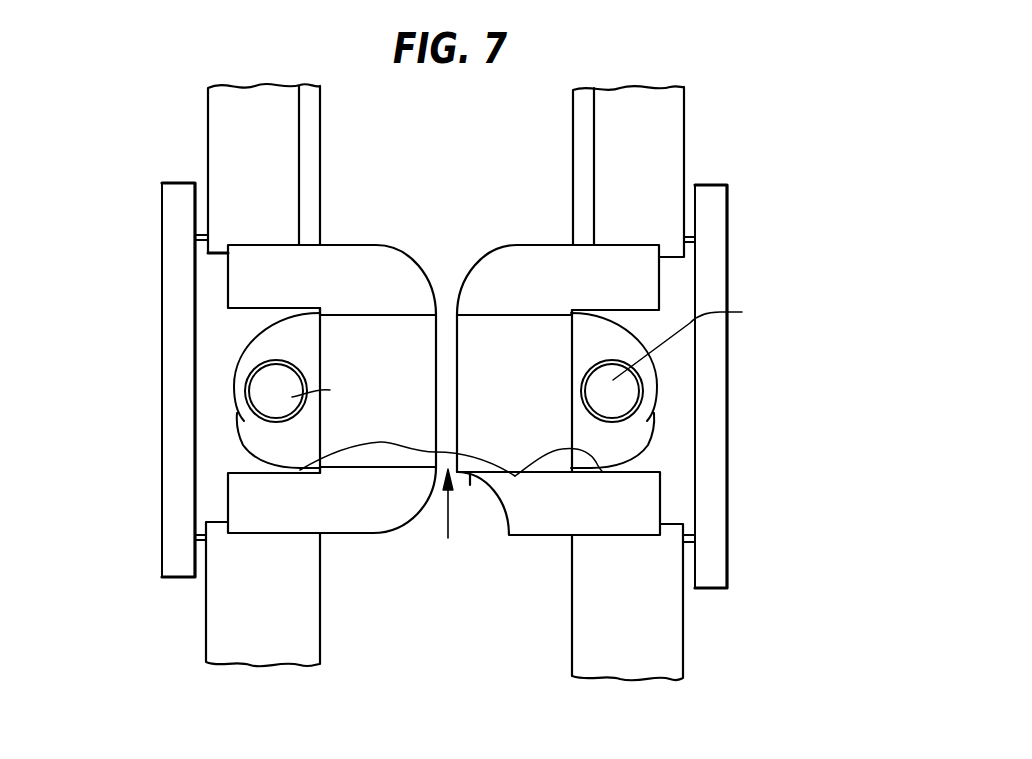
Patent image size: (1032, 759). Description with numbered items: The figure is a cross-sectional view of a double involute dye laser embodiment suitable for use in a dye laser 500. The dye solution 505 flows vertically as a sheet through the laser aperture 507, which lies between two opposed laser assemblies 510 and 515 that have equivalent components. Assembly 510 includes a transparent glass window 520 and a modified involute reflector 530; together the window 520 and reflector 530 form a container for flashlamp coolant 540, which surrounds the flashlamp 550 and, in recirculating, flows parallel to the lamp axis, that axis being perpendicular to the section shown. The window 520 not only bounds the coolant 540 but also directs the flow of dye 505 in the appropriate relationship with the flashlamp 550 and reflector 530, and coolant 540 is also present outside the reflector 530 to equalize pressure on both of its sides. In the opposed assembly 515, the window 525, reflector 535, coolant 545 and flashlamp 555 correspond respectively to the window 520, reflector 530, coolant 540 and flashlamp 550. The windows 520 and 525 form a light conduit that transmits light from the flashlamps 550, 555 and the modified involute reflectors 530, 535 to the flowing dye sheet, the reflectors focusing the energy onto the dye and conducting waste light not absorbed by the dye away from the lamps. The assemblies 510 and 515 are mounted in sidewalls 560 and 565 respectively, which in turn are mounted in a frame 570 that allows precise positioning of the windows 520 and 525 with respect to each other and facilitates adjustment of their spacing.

The dye laser 500 is at (449, 394).
The dye solution 505 is at (446, 534).
The laser aperture 507 is at (476, 365).
The laser assembly 510 is at (616, 245).
The laser assembly 515 is at (337, 243).
The transparent glass window 520 is at (495, 322).
The transparent glass window 525 is at (400, 322).
The modified involute reflector 530 is at (652, 367).
The modified involute reflector 535 is at (243, 427).
The flashlamp coolant 540 is at (615, 446).
The flashlamp coolant 545 is at (267, 340).
The flashlamp 550 is at (623, 400).
The flashlamp 555 is at (277, 377).
The sidewall 560 is at (605, 142).
The sidewall 565 is at (282, 197).
The frame 570 is at (168, 253).